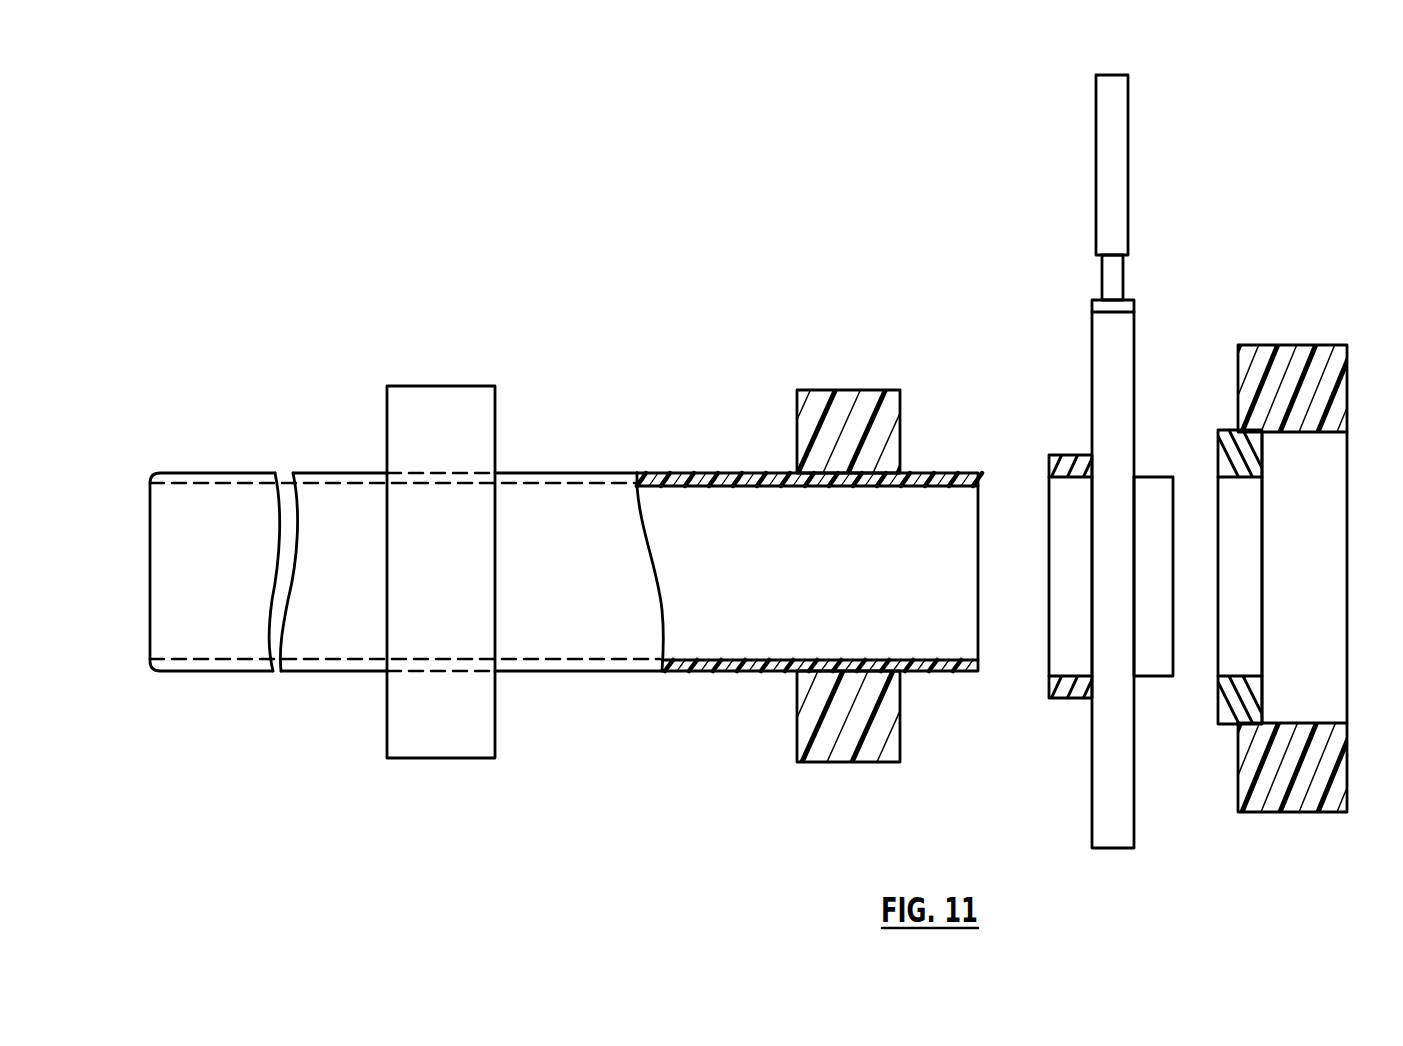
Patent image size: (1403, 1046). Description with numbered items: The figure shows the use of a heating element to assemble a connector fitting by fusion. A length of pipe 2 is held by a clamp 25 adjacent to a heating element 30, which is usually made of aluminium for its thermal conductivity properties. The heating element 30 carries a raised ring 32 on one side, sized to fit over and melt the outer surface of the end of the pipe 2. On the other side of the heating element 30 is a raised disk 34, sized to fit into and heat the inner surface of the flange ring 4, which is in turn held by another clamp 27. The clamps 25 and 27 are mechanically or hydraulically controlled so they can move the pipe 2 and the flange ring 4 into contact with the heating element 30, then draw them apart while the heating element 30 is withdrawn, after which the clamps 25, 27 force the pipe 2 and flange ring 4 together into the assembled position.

The pipe 2 is at (721, 472).
The flange ring 4 is at (1260, 462).
The clamp 25 is at (858, 390).
The clamp 27 is at (1290, 348).
The heating element 30 is at (1126, 328).
The raised ring 32 is at (1062, 456).
The raised disk 34 is at (1146, 476).